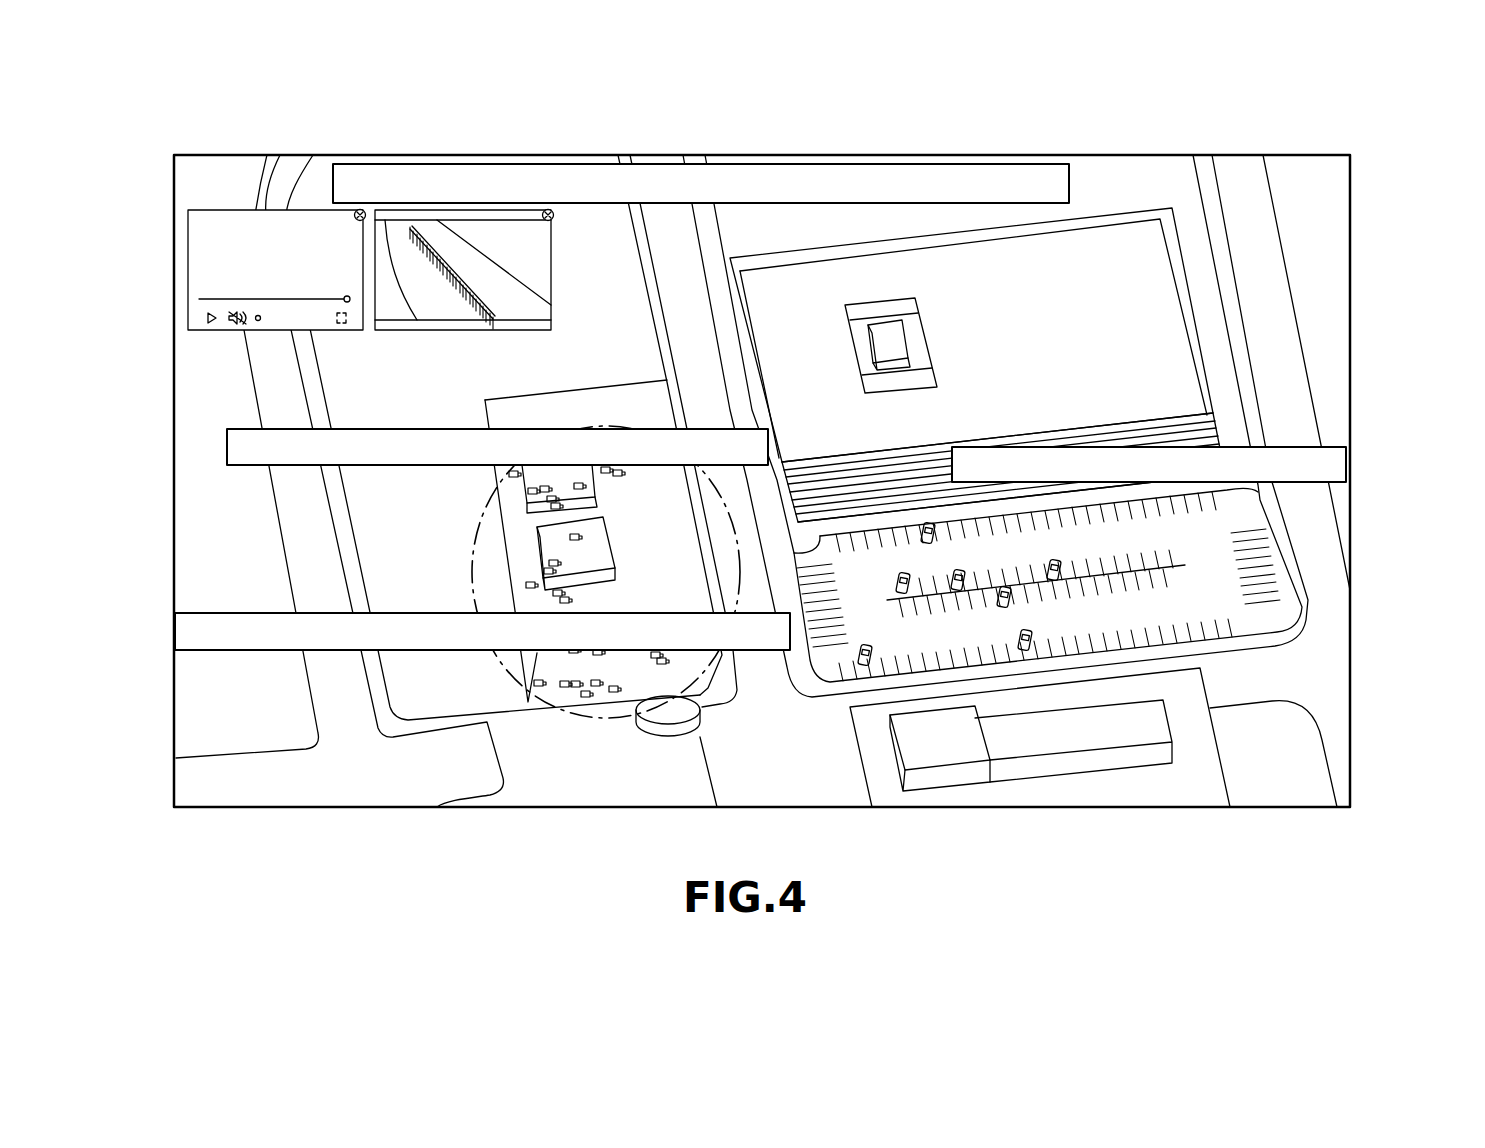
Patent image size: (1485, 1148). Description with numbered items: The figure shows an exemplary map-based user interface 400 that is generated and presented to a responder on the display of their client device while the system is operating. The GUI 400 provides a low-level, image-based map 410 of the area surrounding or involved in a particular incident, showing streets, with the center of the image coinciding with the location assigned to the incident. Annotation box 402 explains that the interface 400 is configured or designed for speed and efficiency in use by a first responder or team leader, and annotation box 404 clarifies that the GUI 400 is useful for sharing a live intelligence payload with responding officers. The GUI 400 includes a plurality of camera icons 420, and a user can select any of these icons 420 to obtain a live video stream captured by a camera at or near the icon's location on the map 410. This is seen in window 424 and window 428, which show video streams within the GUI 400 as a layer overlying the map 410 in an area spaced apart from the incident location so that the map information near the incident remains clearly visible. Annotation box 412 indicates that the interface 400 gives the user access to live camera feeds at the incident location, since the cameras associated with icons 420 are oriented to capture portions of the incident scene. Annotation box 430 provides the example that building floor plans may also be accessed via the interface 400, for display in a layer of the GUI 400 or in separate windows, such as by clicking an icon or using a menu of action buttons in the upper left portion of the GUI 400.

The map-based user interface 400 is at (1352, 826).
The annotation box 402 is at (443, 429).
The annotation box 404 is at (778, 164).
The low-level map 410 is at (320, 812).
The annotation box 412 is at (160, 616).
The camera icons 420 is at (554, 710).
The window 424 is at (259, 188).
The window 428 is at (556, 280).
The annotation box 430 is at (1350, 447).